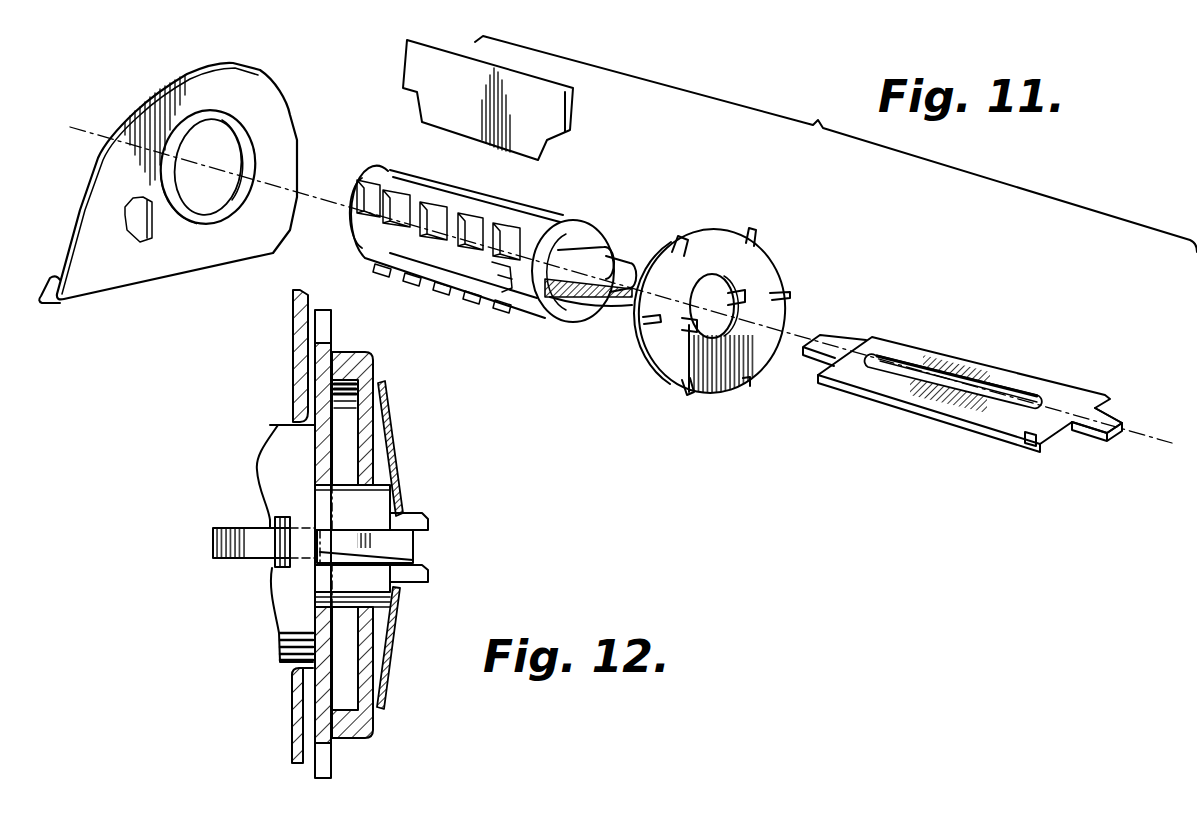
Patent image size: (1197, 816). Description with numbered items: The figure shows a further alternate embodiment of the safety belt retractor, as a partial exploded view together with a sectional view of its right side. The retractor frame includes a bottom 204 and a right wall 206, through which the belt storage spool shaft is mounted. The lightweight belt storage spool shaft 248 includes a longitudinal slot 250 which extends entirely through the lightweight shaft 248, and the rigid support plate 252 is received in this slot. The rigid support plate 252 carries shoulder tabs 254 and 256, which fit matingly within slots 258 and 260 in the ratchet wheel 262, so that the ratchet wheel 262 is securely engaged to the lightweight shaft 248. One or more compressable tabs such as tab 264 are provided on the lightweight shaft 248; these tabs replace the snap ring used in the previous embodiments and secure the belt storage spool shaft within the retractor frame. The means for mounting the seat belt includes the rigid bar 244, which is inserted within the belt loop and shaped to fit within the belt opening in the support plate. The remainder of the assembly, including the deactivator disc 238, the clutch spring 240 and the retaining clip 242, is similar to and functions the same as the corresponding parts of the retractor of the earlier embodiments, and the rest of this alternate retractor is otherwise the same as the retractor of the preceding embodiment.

In FIG. 11, the bottom 204 is at (45, 292).
In FIG. 11, the right wall 206 is at (117, 142).
In FIG. 12, the right wall 206 is at (292, 728).
In FIG. 12, the deactivator disc 238 is at (368, 733).
In FIG. 12, the clutch spring 240 is at (381, 675).
In FIG. 12, the retaining clip 242 is at (403, 612).
In FIG. 11, the rigid bar 244 is at (453, 66).
In FIG. 11, the lightweight belt storage spool shaft 248 is at (583, 233).
In FIG. 12, the lightweight belt storage spool shaft 248 is at (287, 458).
In FIG. 11, the longitudinal slot 250 is at (577, 293).
In FIG. 12, the longitudinal slot 250 is at (422, 538).
In FIG. 11, the rigid support plate 252 is at (993, 375).
In FIG. 12, the rigid support plate 252 is at (213, 545).
In FIG. 11, the shoulder tab 254 is at (1030, 440).
In FIG. 12, the shoulder tab 254 is at (413, 560).
In FIG. 11, the shoulder tab 256 is at (1102, 397).
In FIG. 11, the slot 258 is at (686, 383).
In FIG. 11, the slot 260 is at (748, 295).
In FIG. 11, the ratchet wheel 262 is at (725, 252).
In FIG. 12, the ratchet wheel 262 is at (327, 432).
In FIG. 11, the compressable tab 264 is at (497, 280).
In FIG. 12, the compressable tab 264 is at (272, 567).